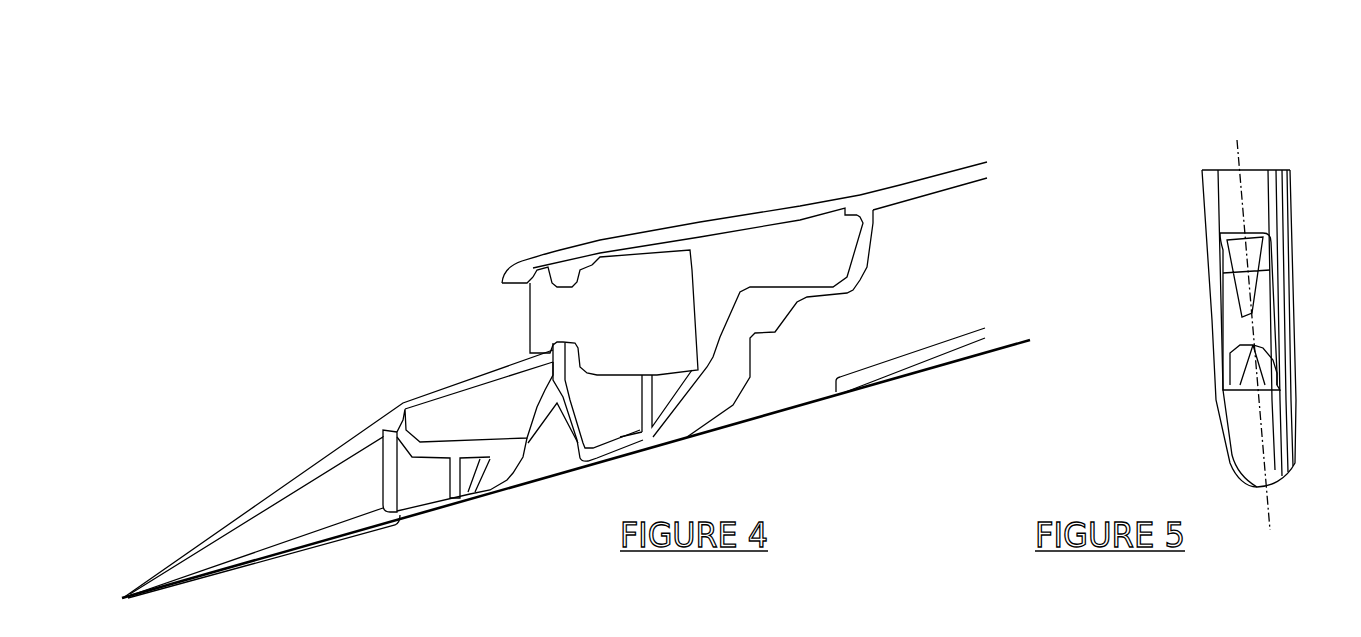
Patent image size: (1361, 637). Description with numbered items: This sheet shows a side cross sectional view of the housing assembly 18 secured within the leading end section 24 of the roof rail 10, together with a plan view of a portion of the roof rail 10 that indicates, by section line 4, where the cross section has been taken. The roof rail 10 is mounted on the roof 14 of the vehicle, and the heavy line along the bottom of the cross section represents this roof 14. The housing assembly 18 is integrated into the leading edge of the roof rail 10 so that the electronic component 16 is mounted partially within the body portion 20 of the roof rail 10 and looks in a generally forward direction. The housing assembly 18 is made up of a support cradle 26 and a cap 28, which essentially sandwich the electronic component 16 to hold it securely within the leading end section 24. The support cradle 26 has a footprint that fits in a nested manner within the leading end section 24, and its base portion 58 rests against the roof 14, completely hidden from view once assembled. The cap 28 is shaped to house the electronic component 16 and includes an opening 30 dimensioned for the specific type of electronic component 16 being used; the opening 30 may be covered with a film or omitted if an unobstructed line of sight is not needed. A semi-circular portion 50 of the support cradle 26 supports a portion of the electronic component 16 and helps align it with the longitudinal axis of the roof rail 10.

In FIG. 4, the roof rail apparatus 10 is at (966, 150).
In FIG. 5, the roof rail apparatus 10 is at (1279, 158).
In FIG. 4, the roof 14 is at (1024, 338).
In FIG. 4, the electronic component 16 is at (617, 290).
In FIG. 5, the housing assembly 18 is at (1218, 289).
In FIG. 4, the body portion 20 is at (900, 187).
In FIG. 4, the leading end section 24 is at (375, 425).
In FIG. 5, the leading end section 24 is at (1240, 445).
In FIG. 4, the support cradle 26 is at (793, 315).
In FIG. 4, the cap 28 is at (760, 209).
In FIG. 4, the opening 30 is at (540, 280).
In FIG. 4, the semi-circular portion 50 is at (563, 365).
In FIG. 4, the base portion 58 is at (357, 522).
In FIG. 5, the section line 4- 4 is at (1212, 153).